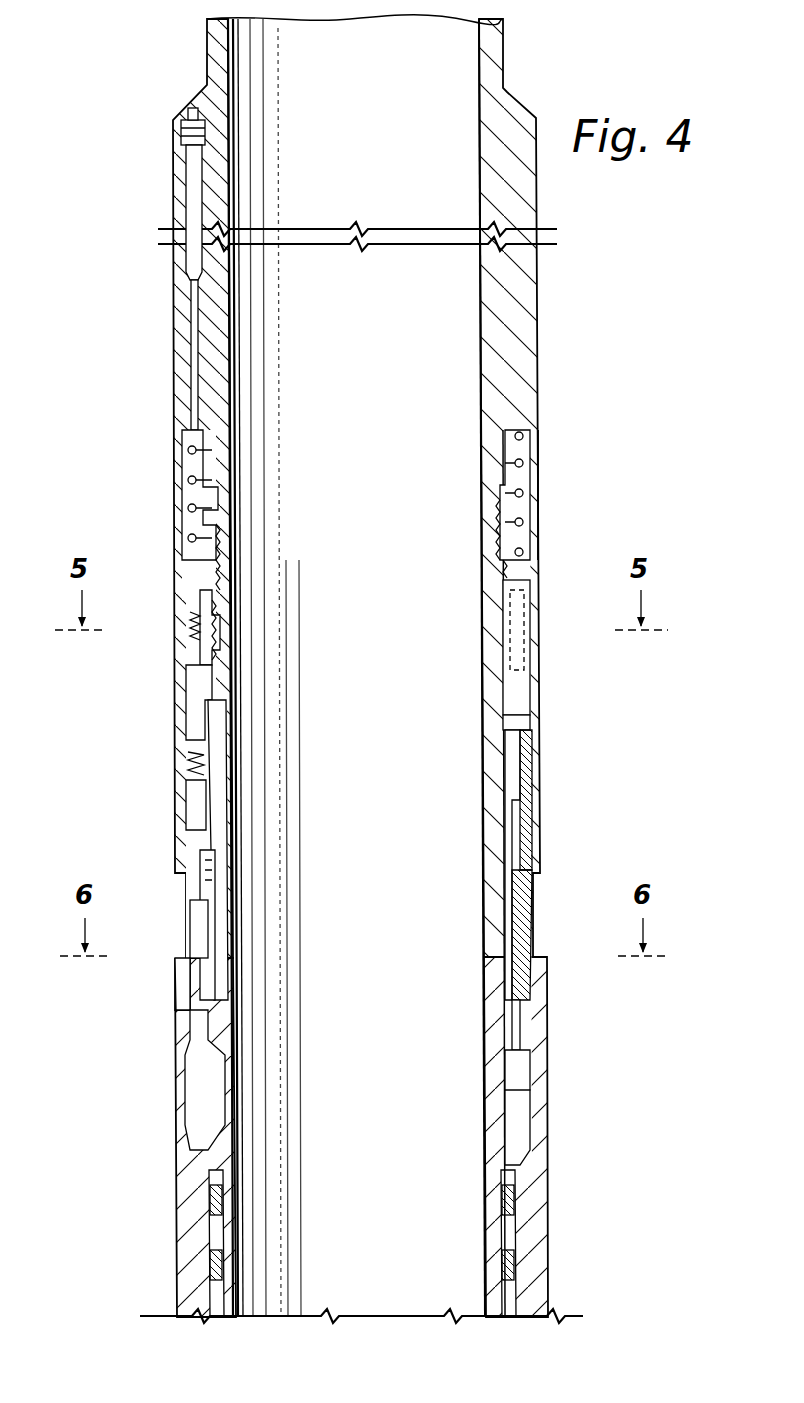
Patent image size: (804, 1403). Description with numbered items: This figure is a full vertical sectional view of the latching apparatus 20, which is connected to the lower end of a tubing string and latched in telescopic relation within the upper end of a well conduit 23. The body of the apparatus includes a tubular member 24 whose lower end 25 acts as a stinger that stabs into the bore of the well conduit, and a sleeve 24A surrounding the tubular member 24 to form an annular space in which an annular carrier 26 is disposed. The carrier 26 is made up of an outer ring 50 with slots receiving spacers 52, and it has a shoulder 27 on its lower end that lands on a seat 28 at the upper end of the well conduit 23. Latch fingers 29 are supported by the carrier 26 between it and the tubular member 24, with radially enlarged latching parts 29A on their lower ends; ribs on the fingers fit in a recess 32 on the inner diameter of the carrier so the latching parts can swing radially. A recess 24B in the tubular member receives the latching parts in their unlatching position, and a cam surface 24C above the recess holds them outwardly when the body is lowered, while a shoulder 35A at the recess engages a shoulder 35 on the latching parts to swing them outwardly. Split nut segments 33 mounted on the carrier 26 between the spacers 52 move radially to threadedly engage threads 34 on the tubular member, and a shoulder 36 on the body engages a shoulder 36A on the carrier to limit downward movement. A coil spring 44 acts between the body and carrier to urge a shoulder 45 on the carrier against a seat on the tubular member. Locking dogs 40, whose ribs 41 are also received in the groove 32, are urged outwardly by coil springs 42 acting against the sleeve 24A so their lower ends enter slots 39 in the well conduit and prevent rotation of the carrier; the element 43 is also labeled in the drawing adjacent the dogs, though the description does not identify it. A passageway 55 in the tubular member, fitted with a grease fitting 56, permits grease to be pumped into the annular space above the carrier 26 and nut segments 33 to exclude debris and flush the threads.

The apparatus 20 is at (545, 740).
The well conduit 23 is at (172, 1152).
The tubular member 24 is at (483, 632).
The sleeve 24A is at (176, 495).
The recess 24B is at (212, 1100).
The cam surface 24C is at (218, 932).
The lower end of tubular member 25 is at (512, 1243).
The carrier 26 is at (526, 844).
The shoulder 27 is at (540, 966).
The seat 28 is at (546, 472).
The fingers 29 is at (520, 889).
The latching parts 29A is at (492, 1099).
The recess 32 is at (512, 800).
The nut segments 33 is at (216, 598).
The threads 34 is at (506, 538).
The shoulder 35 is at (506, 1035).
The shoulder 35A is at (498, 1064).
The shoulder 36 is at (514, 485).
The shoulder 36A is at (214, 563).
The slots 39 is at (178, 1001).
The locking dogs 40 is at (220, 890).
The ribs 41 is at (198, 809).
The coil springs 42 is at (186, 766).
The latch sleeve 43 is at (230, 705).
The coil spring 44 is at (190, 472).
The shoulder 45 is at (500, 712).
The outer ring 50 is at (190, 688).
The spacers 52 is at (520, 678).
The passageway 55 is at (194, 186).
The grease fitting 56 is at (183, 133).